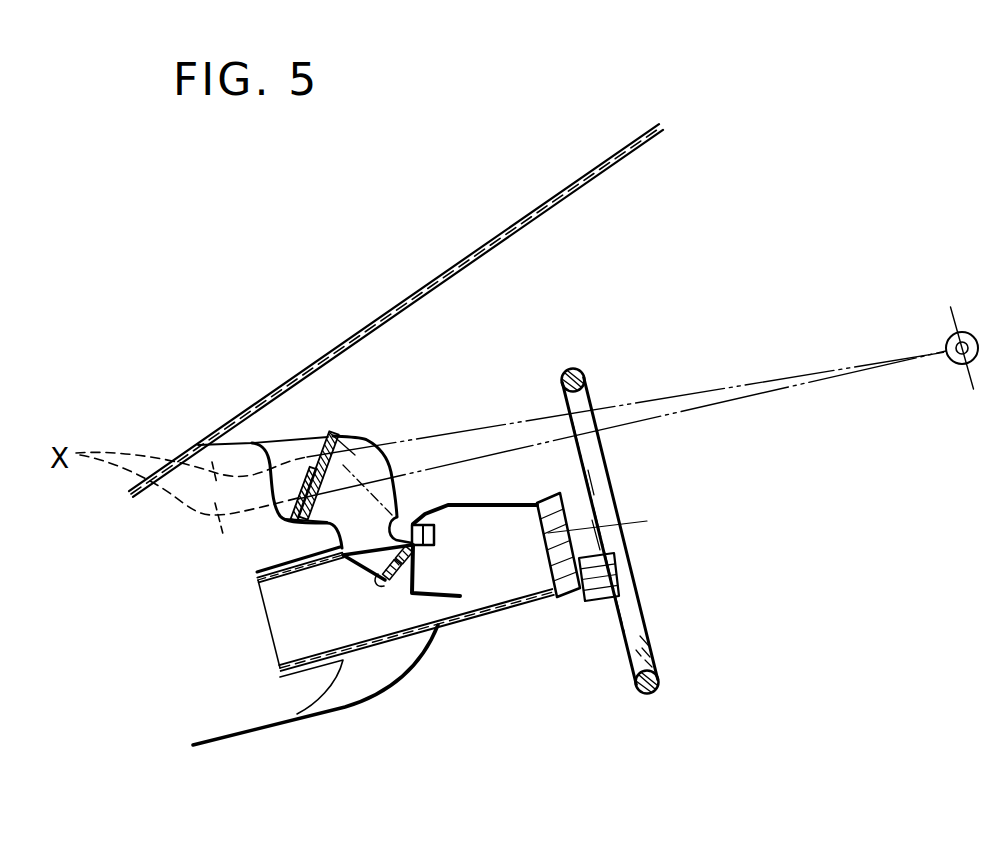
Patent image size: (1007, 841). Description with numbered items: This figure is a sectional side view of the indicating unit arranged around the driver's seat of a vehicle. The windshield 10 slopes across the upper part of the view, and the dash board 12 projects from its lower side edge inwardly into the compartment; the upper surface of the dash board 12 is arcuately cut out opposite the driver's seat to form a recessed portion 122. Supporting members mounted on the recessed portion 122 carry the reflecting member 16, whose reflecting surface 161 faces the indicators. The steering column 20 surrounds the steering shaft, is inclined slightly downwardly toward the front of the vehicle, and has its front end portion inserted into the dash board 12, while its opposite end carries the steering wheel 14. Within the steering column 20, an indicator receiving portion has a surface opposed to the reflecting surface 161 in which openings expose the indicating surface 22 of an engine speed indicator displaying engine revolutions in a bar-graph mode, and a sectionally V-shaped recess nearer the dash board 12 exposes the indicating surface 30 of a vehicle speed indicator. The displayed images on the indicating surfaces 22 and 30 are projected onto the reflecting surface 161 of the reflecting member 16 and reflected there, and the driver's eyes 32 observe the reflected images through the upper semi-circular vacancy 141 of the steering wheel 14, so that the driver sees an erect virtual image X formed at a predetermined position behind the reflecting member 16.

The windshield 10 is at (440, 272).
The dash board 12 is at (226, 443).
The recessed portion 122 is at (292, 517).
The steering wheel 14 is at (580, 369).
The upper semi-circular vacancy 141 is at (598, 397).
The reflecting member 16 is at (321, 436).
The reflecting surface 161 is at (352, 452).
The steering column 20 is at (517, 613).
The indicating surface 22 is at (398, 512).
The indicating surface of vehicle speed indicator 30 is at (383, 566).
The eyes 32 is at (966, 336).